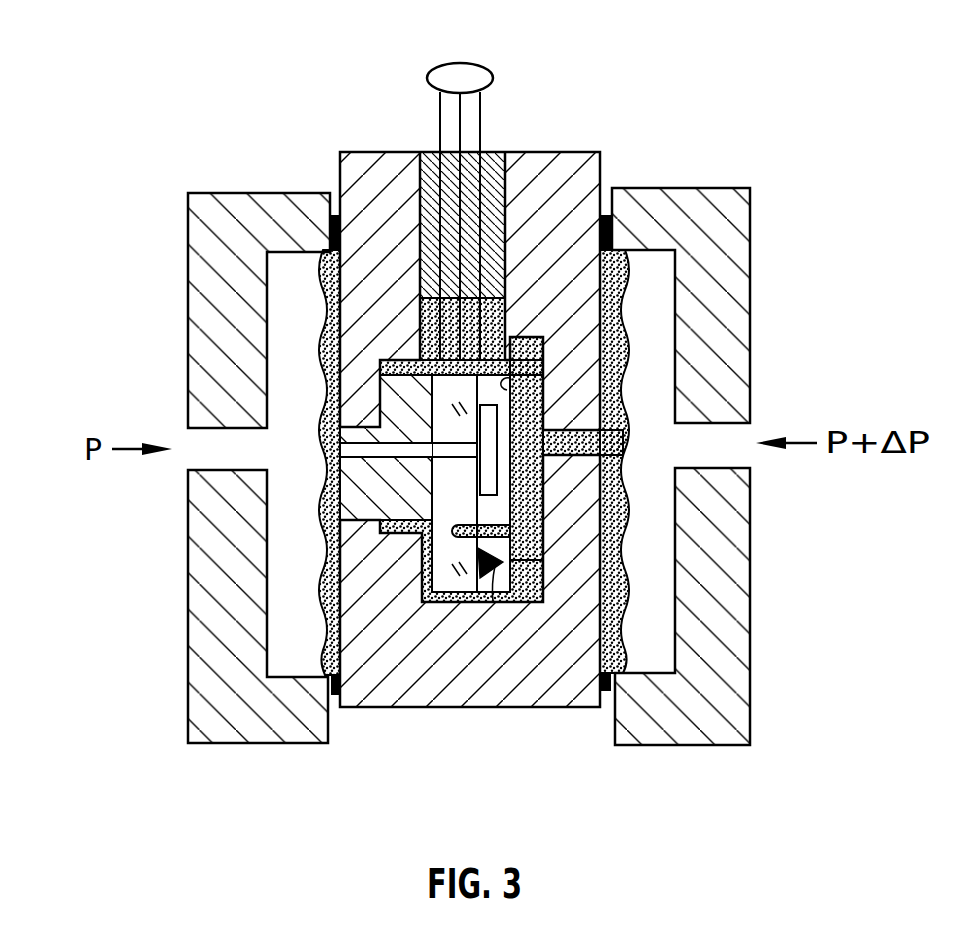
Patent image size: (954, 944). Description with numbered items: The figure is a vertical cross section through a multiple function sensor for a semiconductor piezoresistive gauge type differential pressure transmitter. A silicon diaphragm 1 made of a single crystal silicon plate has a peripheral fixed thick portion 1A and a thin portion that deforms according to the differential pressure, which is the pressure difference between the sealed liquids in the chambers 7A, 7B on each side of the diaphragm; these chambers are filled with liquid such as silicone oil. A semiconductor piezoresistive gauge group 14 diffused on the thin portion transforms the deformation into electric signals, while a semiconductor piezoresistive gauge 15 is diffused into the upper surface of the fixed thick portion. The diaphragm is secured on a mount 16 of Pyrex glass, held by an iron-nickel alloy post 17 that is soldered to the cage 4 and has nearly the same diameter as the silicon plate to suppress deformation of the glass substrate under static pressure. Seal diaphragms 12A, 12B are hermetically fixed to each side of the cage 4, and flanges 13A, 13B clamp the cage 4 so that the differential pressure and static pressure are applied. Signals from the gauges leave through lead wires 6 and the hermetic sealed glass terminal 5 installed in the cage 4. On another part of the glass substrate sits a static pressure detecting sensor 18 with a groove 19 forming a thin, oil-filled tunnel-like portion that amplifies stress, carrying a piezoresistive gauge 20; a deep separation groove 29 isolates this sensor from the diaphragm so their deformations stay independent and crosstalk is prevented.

The silicon diaphragm 1 is at (623, 458).
The fixed thick portion 1A is at (497, 507).
The cage 4 is at (365, 707).
The hermetic sealed glass terminal 5 is at (492, 157).
The lead wires 6 is at (440, 90).
The chamber 7A is at (340, 452).
The chamber 7B is at (530, 603).
The seal diaphragm 12A is at (332, 586).
The seal diaphragm 12B is at (627, 642).
The flange 13A is at (262, 743).
The flange 13B is at (690, 745).
The semiconductor piezoresistive gauge group 14 is at (545, 428).
The semiconductor piezoresistive gauge 15 is at (540, 358).
The mount 16 is at (447, 603).
The post 17 is at (377, 398).
The static pressure detecting sensor 18 is at (622, 648).
The groove 19 is at (493, 603).
The piezoresistive gauge 20 is at (505, 562).
The separation groove 29 is at (548, 508).